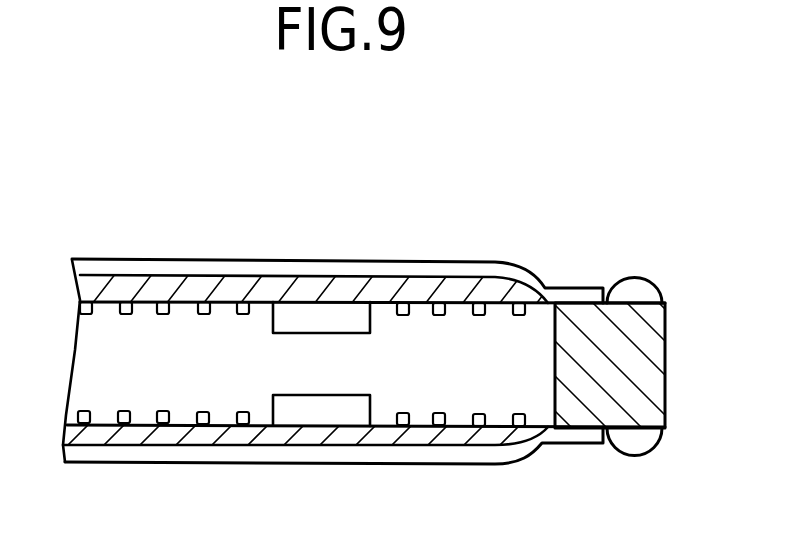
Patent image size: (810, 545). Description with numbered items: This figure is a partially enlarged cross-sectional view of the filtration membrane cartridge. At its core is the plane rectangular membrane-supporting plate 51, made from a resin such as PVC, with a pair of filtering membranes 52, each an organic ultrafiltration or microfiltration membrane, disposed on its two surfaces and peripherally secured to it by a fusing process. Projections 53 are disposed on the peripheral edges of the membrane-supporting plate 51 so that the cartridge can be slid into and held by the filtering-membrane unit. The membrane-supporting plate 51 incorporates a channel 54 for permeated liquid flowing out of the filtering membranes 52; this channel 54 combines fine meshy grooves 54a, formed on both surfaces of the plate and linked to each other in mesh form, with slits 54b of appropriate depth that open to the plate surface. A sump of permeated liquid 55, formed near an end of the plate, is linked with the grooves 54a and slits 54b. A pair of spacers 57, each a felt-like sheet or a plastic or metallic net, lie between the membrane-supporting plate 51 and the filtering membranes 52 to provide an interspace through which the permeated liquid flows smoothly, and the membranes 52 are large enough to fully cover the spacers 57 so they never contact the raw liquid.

The membrane-supporting plate 51 is at (688, 351).
The filtering membrane 52 is at (437, 268).
The projection 53 is at (628, 291).
The channel 54 is at (421, 193).
The fine meshy grooves 54a is at (243, 306).
The slits 54b is at (347, 313).
The sump of permeated liquid 55 is at (523, 362).
The spacer 57 is at (167, 287).